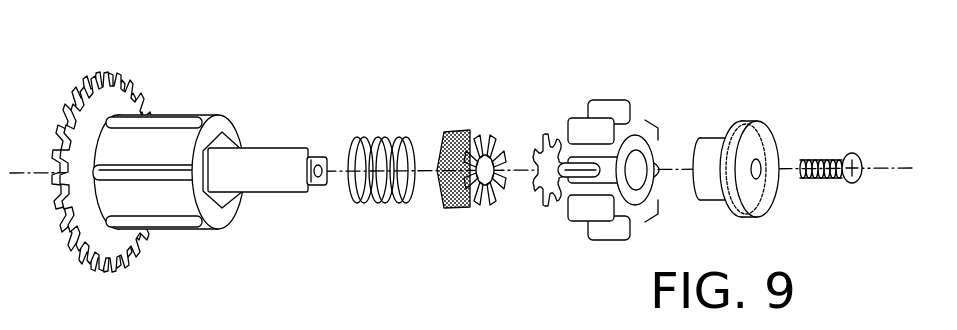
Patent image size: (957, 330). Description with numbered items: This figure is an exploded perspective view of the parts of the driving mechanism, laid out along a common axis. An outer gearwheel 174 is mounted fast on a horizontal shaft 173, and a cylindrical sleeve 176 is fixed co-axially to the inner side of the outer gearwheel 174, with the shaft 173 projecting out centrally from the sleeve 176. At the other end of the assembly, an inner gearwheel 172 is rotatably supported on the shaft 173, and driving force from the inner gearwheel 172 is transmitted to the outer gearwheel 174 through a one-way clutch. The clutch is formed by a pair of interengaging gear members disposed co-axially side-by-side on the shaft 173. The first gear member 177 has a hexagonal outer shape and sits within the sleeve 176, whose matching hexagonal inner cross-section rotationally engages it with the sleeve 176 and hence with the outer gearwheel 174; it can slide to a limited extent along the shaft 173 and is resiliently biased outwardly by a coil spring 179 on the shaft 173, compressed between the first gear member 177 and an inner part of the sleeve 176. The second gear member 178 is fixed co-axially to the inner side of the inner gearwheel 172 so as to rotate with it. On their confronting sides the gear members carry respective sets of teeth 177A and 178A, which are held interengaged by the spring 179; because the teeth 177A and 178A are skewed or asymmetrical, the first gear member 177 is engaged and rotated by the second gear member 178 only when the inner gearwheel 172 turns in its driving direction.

The inner gearwheel 172 is at (610, 105).
The horizontal shaft 173 is at (295, 160).
The outer gearwheel 174 is at (103, 84).
The cylindrical sleeve 176 is at (173, 140).
The first gear member 177 is at (470, 179).
The teeth of first gear member 177A is at (493, 202).
The second gear member 178 is at (550, 173).
The teeth of second gear member 178A is at (547, 192).
The coil spring 179 is at (377, 147).